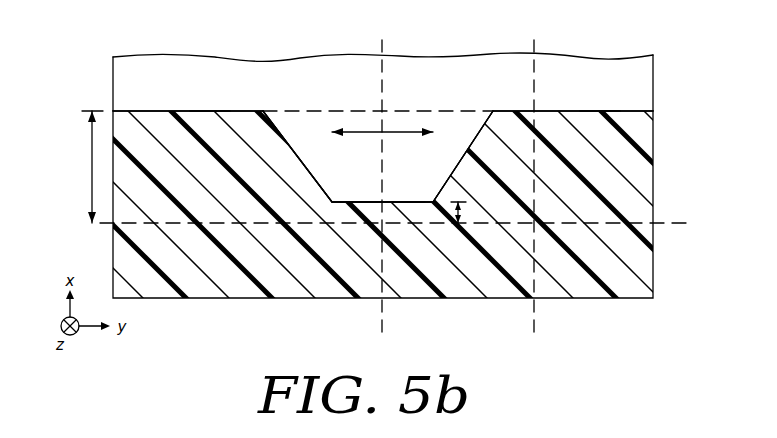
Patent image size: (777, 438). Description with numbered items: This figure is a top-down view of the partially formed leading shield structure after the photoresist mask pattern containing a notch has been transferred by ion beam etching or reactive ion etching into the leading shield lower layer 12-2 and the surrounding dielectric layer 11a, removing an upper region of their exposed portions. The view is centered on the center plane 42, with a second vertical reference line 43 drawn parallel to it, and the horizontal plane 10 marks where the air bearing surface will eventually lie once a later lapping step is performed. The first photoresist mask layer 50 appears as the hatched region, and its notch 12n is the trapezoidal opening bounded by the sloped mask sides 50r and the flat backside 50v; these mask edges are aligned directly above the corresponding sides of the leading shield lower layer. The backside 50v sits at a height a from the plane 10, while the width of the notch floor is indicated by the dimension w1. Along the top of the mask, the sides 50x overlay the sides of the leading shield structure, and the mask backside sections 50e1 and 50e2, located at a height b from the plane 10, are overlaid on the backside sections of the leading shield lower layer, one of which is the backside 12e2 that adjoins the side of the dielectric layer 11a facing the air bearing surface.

The plane 10 is at (375, 223).
The dielectric layer 11a is at (123, 88).
The notch 12n is at (304, 128).
The LS lower layer backside 12e2 is at (452, 111).
The LS lower layer 12-2 is at (407, 187).
The center plane 42 is at (382, 189).
The center line 43 is at (534, 189).
The first photoresist mask layer 50 is at (648, 160).
The sides 50x is at (113, 130).
The first photoresist mask layer backside section 50e1 is at (210, 111).
The first photoresist mask layer backside section 50e2 is at (600, 111).
The first photoresist mask layer sides 50r is at (322, 192).
The backside 50v is at (350, 205).
The height b is at (89, 167).
The height a is at (464, 212).
The groove width dimension w1 is at (382, 124).